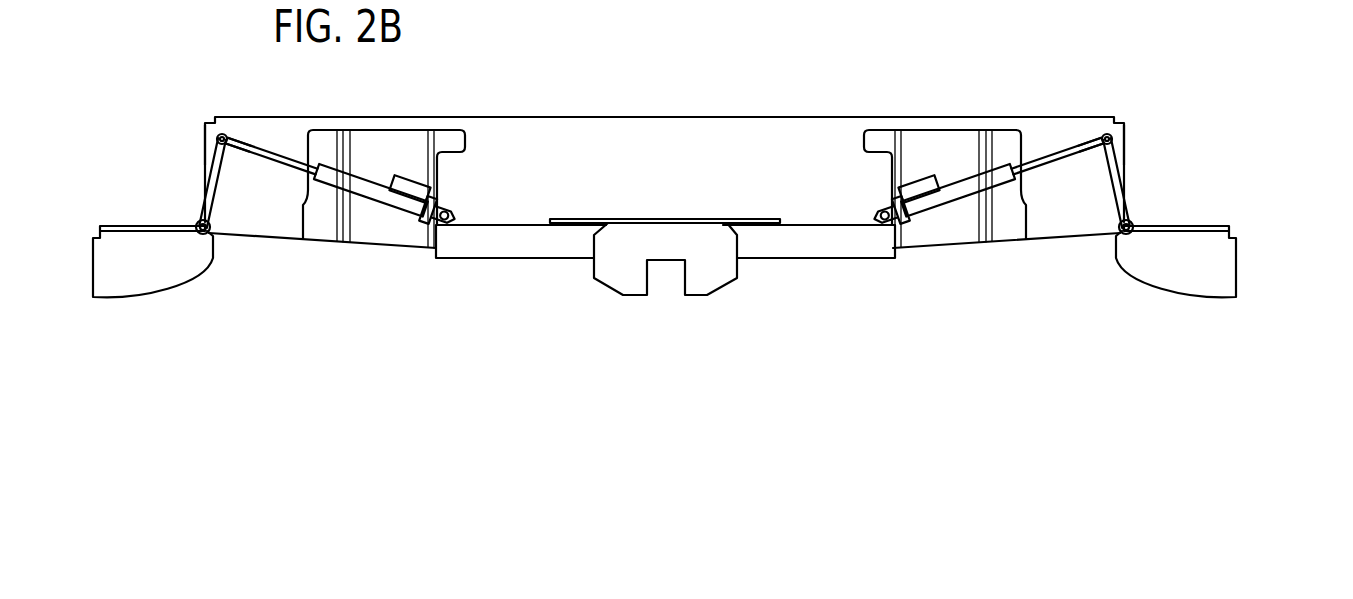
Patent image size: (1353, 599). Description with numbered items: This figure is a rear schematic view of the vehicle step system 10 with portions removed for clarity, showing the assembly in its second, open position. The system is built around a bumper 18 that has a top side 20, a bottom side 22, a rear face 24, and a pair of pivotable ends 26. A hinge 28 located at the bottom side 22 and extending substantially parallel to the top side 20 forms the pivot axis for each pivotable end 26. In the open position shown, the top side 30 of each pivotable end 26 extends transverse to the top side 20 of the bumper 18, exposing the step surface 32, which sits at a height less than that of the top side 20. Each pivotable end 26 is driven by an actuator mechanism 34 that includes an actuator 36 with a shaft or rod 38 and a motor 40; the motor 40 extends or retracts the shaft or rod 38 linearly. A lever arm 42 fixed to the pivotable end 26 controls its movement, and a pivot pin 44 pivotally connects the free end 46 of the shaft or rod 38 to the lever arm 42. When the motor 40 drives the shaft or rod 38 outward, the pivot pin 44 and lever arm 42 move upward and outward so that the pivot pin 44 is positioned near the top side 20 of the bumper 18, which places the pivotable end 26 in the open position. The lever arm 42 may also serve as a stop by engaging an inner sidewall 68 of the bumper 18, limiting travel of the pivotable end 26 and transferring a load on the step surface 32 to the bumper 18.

The vehicle step system 10 is at (703, 221).
The bumper 18 is at (500, 210).
The top side of bumper 20 is at (523, 117).
The bottom side of bumper 22 is at (472, 259).
The rear face of bumper 24 is at (825, 208).
The pivotable end 26 is at (703, 242).
The hinge 28 is at (213, 231).
The top side of pivotable end 30 is at (83, 243).
The step surface 32 is at (145, 226).
The actuator mechanism 34 is at (405, 217).
The actuator 36 is at (392, 197).
The shaft or rod 38 is at (272, 165).
The motor 40 is at (714, 182).
The lever arm 42 is at (208, 192).
The pivot pin 44 is at (224, 136).
The free end of shaft 46 is at (230, 154).
The inner sidewall of bumper 68 is at (207, 138).